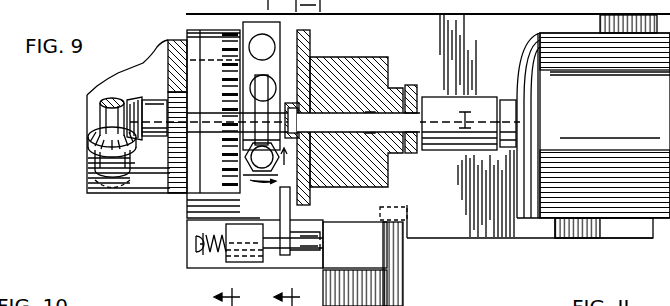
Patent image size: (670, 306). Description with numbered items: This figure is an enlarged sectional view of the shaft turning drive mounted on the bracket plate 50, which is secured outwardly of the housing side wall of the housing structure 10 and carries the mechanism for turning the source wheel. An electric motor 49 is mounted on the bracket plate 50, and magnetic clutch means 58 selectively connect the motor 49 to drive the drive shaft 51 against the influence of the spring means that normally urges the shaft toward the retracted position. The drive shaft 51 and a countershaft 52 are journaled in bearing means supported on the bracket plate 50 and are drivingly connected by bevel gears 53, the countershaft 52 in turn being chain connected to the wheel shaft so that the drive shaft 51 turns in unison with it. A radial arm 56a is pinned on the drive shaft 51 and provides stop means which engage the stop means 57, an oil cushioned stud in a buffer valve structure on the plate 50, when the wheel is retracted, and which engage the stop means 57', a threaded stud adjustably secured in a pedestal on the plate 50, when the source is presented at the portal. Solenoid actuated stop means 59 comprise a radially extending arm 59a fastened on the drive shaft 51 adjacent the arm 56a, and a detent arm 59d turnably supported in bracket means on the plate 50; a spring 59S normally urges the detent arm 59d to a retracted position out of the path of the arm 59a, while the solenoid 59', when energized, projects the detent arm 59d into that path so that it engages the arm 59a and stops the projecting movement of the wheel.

The machine frame 10 is at (220, 2).
The electric motor 49 is at (593, 116).
The bracket plate 50 is at (598, 228).
The drive shaft 51 is at (155, 118).
The countershaft 52 is at (115, 99).
The bevel gears 53 is at (146, 160).
The radial arm 56a is at (261, 77).
The stop means 57 is at (297, 104).
The stop means 57' is at (238, 162).
The magnetic clutch means 58 is at (388, 68).
The stop means 59 is at (287, 246).
The solenoid 59' is at (413, 264).
The radially extending arm 59a is at (293, 108).
The detent arm 59d is at (400, 200).
The spring 59S is at (213, 258).